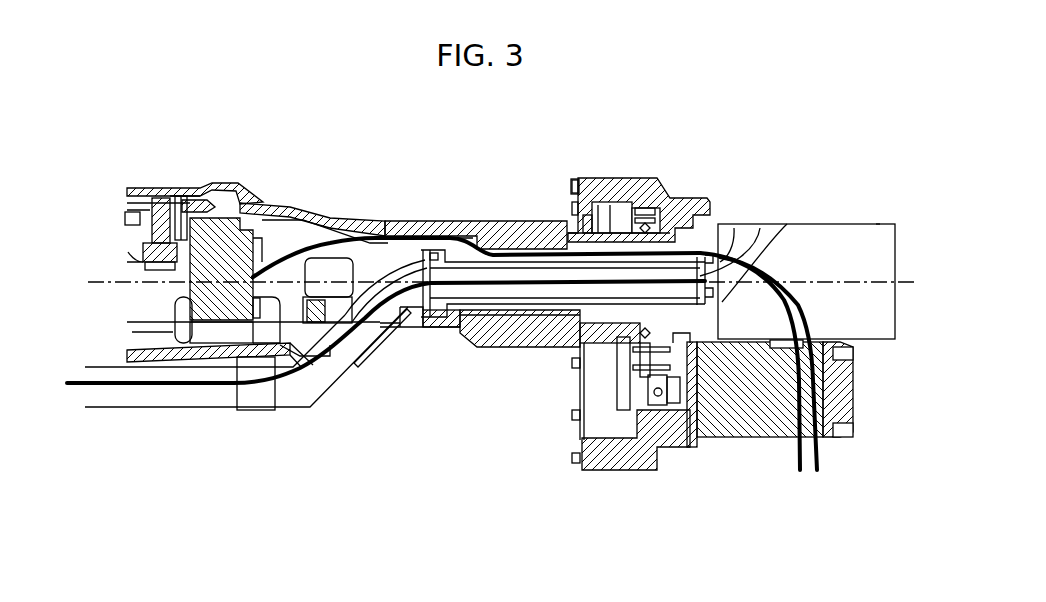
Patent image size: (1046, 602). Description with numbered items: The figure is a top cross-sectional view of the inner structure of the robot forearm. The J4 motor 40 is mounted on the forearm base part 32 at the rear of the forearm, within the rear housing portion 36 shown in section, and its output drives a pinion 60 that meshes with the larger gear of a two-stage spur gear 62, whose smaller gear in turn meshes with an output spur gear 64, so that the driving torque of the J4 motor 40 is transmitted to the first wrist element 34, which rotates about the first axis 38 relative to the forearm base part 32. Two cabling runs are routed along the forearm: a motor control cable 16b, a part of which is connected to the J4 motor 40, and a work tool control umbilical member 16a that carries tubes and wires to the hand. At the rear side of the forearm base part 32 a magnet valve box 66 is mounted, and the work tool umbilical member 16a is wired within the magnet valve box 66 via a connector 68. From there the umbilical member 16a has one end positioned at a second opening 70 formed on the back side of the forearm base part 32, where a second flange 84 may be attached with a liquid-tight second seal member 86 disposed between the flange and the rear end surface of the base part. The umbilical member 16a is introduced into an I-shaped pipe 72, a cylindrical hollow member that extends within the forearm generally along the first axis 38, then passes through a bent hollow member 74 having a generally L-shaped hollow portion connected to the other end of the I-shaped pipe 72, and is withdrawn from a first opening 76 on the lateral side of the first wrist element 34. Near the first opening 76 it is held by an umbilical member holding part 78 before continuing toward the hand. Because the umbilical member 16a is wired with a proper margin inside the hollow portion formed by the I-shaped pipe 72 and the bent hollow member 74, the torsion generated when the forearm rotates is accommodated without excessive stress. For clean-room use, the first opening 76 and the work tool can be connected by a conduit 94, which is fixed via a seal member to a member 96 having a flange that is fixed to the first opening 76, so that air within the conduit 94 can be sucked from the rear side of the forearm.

The work tool control umbilical member 16a is at (798, 460).
The motor control cable 16b is at (815, 460).
The forearm base part 32 is at (675, 166).
The first wrist element 34 is at (504, 221).
The motor housing 36 is at (598, 416).
The first axis 38 is at (900, 228).
The J4 motor 40 is at (717, 412).
The pinion 60 is at (627, 400).
The two-stage spur gear 62 is at (603, 375).
The output spur gear 64 is at (590, 180).
The magnet valve box 66 is at (878, 224).
The connector 68 is at (793, 343).
The second opening 70 is at (760, 228).
The I-shaped pipe 72 is at (512, 305).
The bent hollow member 74 is at (381, 262).
The first opening 76 is at (363, 350).
The umbilical member holding part 78 is at (250, 413).
The second flange 84 is at (787, 224).
The second seal member 86 is at (734, 228).
The conduit 94 is at (148, 412).
The member having a flange 96 is at (398, 340).